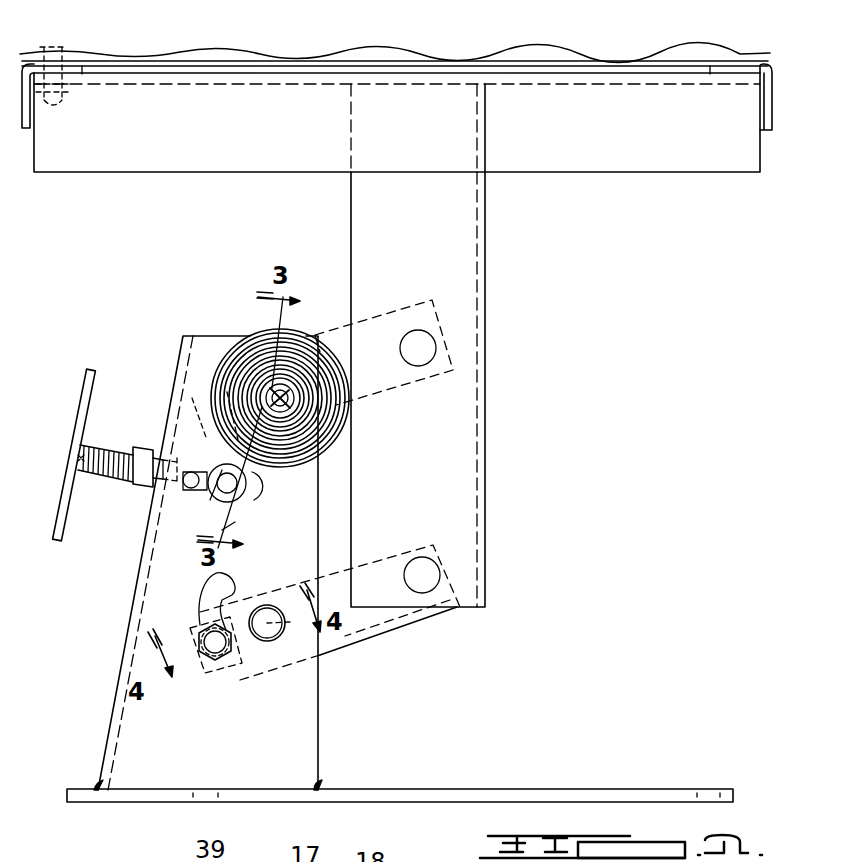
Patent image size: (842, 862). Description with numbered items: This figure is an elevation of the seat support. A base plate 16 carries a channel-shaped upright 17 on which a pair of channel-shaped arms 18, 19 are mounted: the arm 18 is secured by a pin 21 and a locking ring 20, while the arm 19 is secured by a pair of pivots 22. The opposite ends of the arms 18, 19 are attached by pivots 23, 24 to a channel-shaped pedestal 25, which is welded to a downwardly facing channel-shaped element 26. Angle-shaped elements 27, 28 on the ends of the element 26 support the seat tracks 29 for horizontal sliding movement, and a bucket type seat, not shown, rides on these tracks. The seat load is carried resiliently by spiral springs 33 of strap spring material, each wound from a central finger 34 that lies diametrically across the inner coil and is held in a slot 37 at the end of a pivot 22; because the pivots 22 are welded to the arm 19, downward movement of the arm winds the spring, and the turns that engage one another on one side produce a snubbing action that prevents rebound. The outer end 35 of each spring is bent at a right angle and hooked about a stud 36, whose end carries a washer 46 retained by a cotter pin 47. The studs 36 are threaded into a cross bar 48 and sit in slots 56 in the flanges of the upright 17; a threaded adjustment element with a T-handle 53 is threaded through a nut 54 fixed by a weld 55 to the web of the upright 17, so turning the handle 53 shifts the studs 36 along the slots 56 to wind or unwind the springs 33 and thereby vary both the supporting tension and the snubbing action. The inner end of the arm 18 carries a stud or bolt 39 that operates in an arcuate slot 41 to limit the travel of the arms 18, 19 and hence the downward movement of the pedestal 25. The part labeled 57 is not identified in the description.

The base plate 16 is at (437, 788).
The channel-shaped upright 17 is at (136, 592).
The channel-shaped arm 18 is at (333, 572).
The channel-shaped arm 19 is at (322, 335).
The locking ring 20 is at (284, 630).
The pin 21 is at (272, 636).
The pivots 22 is at (262, 388).
The pivot 23 is at (421, 568).
The pivot 24 is at (418, 342).
The channel-shaped pedestal 25 is at (488, 444).
The channel-shaped element 26 is at (563, 160).
The angle-shaped element 27 is at (30, 124).
The angle-shaped element 28 is at (765, 104).
The seat tracks 29 is at (122, 55).
The spiral springs 33 is at (300, 396).
The central finger 34 is at (286, 406).
The end 35 is at (222, 528).
The stud 36 is at (230, 508).
The slot 37 is at (285, 392).
The stud or bolt 39 is at (220, 658).
The arcuate slot 41 is at (234, 587).
The washers 46 is at (242, 482).
The cotter pins 47 is at (244, 503).
The cross bar 48 is at (212, 498).
The handle 53 is at (77, 410).
The nut 54 is at (137, 447).
The weld 55 is at (162, 453).
The slots 56 is at (190, 487).
The threaded rod 57 is at (107, 470).